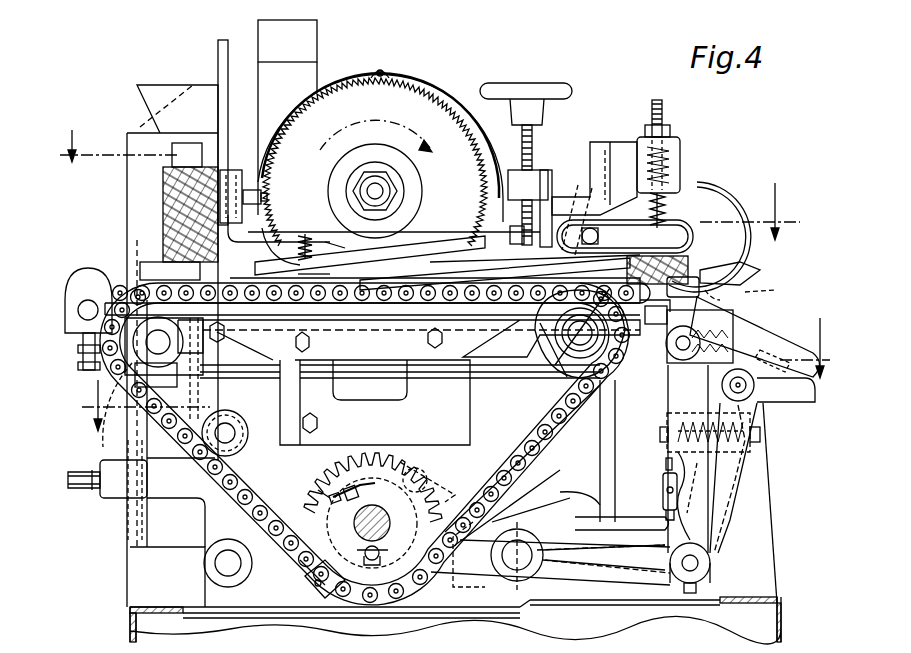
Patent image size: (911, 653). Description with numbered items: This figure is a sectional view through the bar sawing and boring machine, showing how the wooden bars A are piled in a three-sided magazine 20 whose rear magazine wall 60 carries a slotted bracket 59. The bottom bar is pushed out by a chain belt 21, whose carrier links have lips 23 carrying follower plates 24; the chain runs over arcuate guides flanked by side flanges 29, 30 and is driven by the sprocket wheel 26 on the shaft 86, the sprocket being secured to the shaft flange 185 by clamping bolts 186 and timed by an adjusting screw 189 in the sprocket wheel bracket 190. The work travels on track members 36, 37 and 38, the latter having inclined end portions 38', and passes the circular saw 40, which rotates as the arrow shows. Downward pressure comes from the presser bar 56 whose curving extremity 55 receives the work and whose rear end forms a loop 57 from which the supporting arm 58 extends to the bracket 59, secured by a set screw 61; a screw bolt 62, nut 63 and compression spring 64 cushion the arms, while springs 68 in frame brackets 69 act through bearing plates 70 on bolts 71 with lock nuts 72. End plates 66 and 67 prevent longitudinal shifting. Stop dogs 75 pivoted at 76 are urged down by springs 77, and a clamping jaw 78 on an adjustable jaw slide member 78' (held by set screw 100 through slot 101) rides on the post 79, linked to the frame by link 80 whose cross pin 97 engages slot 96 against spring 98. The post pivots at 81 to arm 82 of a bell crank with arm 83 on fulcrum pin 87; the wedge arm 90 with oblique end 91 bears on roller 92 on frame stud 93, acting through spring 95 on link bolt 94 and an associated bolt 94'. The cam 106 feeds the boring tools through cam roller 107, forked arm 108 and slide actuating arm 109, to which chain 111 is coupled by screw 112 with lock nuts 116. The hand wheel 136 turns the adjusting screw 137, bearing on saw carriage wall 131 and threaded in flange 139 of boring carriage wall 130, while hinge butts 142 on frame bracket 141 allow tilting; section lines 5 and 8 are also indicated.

The section line 8- 8 is at (430, 177).
The bar A is at (163, 180).
The magazine 20 is at (172, 192).
The rear magazine wall 60 is at (228, 73).
The slotted bracket 59 is at (242, 170).
The set screw 61 is at (262, 197).
The upwardly curving extremity 55 is at (275, 222).
The circular saw 40 is at (375, 162).
The supporting arm 58 is at (482, 215).
The presser bar 56 is at (415, 262).
The end plate 66 is at (281, 248).
The screw bolt 62 is at (312, 247).
The nut 63 is at (312, 262).
The compression spring 64 is at (342, 252).
The end plate 67 is at (520, 266).
The feed-way track member 36 is at (540, 280).
The extension track member 37 is at (585, 280).
The hand wheel 136 is at (525, 92).
The adjusting screw 137 is at (532, 135).
The flange 139 is at (528, 185).
The boring carriage wall 130 is at (548, 175).
The saw carriage wall 131 is at (520, 233).
The spring 77 is at (580, 180).
The compression spring 68 is at (640, 192).
The frame bracket 69 is at (680, 150).
The bolt 71 is at (652, 105).
The lock nut 72 is at (645, 130).
The bearing plate 70 is at (665, 210).
The upwardly curving loop 57 is at (710, 215).
The stop dog 75 is at (620, 243).
The pivot 76 is at (600, 236).
The follower plate 24 is at (160, 285).
The side flange 29 is at (103, 447).
The section line 5- 5 is at (456, 364).
The chain belt 21 is at (190, 468).
The hinge butt 142 is at (409, 349).
The frame bracket 141 is at (375, 402).
The side flange 30 is at (555, 380).
The link 80 is at (620, 355).
The extension track member 38 is at (683, 287).
The clamping jaw 78 is at (730, 269).
The jaw slide member 78' is at (765, 280).
The set screw 100 is at (723, 286).
The slot 101 is at (664, 313).
The cross pin 97 is at (690, 335).
The compression spring 98 is at (711, 347).
The slot 96 is at (760, 325).
The downwardly inclined outer end portion 38' is at (773, 349).
The post 79 is at (654, 459).
The frame stud 93 is at (755, 383).
The roller 92 is at (778, 400).
The obliquely faced upper end 91 is at (748, 410).
The link bolt 94 is at (692, 436).
The spring bolt 94' is at (772, 444).
The chain 111 is at (666, 466).
The screw 112 is at (663, 510).
The spring 95 is at (700, 475).
The wedge arm 90 is at (740, 500).
The pivot 81 is at (700, 565).
The driving sprocket wheel 26 is at (480, 468).
The forked arm 108 is at (538, 503).
The arm 83 is at (475, 590).
The fulcrum pin 87 is at (517, 556).
The slide actuating arm 109 is at (580, 516).
The lock nut 116 is at (580, 489).
The arm 82 is at (550, 562).
The cam 106 is at (325, 452).
The shaft 86 is at (390, 520).
The sprocket wheel bracket 190 is at (355, 478).
The adjusting screw 189 is at (318, 490).
The clamping bolt 186 is at (381, 560).
The cam roller 107 is at (425, 465).
The shaft flange 185 is at (310, 572).
The lip 23 is at (305, 588).